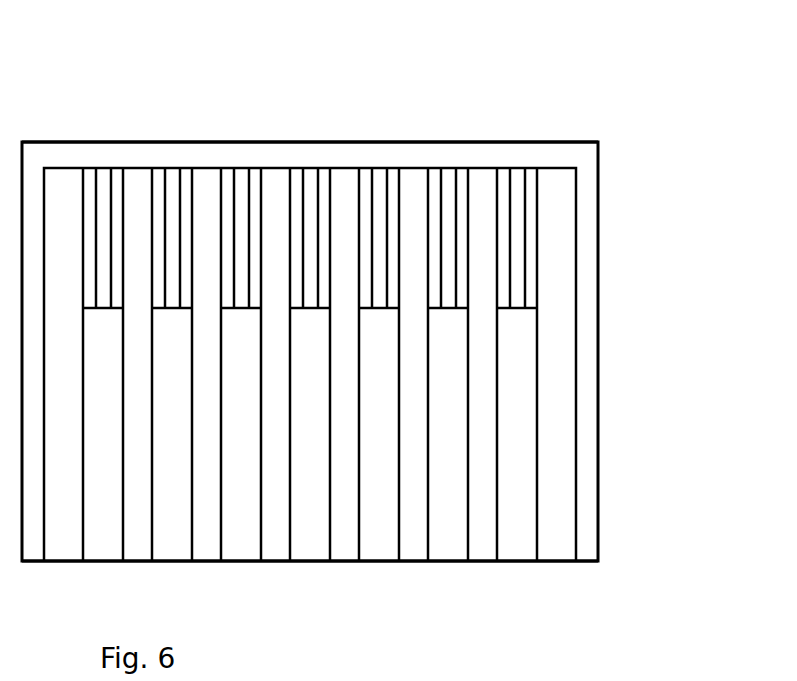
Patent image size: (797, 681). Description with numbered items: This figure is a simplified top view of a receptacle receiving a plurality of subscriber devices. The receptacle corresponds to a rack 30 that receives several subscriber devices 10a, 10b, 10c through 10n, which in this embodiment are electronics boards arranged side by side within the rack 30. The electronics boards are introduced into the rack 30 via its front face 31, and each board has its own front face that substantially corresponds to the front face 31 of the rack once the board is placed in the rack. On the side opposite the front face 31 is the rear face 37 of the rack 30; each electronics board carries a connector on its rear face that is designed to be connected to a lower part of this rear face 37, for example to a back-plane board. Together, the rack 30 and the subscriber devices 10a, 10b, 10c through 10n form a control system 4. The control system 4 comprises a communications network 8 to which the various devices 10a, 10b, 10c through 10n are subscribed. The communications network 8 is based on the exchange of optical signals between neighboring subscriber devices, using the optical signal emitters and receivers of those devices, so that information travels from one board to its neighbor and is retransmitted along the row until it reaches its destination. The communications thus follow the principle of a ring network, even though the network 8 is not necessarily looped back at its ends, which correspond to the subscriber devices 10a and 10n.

The control system 4 is at (657, 70).
The communications network 8 is at (622, 239).
The rack 30 is at (483, 142).
The front face of the rack 31 is at (376, 572).
The rear face of the rack 37 is at (198, 111).
The subscriber device 10a is at (104, 550).
The subscriber device 10b is at (172, 550).
The subscriber device 10c is at (240, 550).
The subscriber device 10n is at (516, 550).